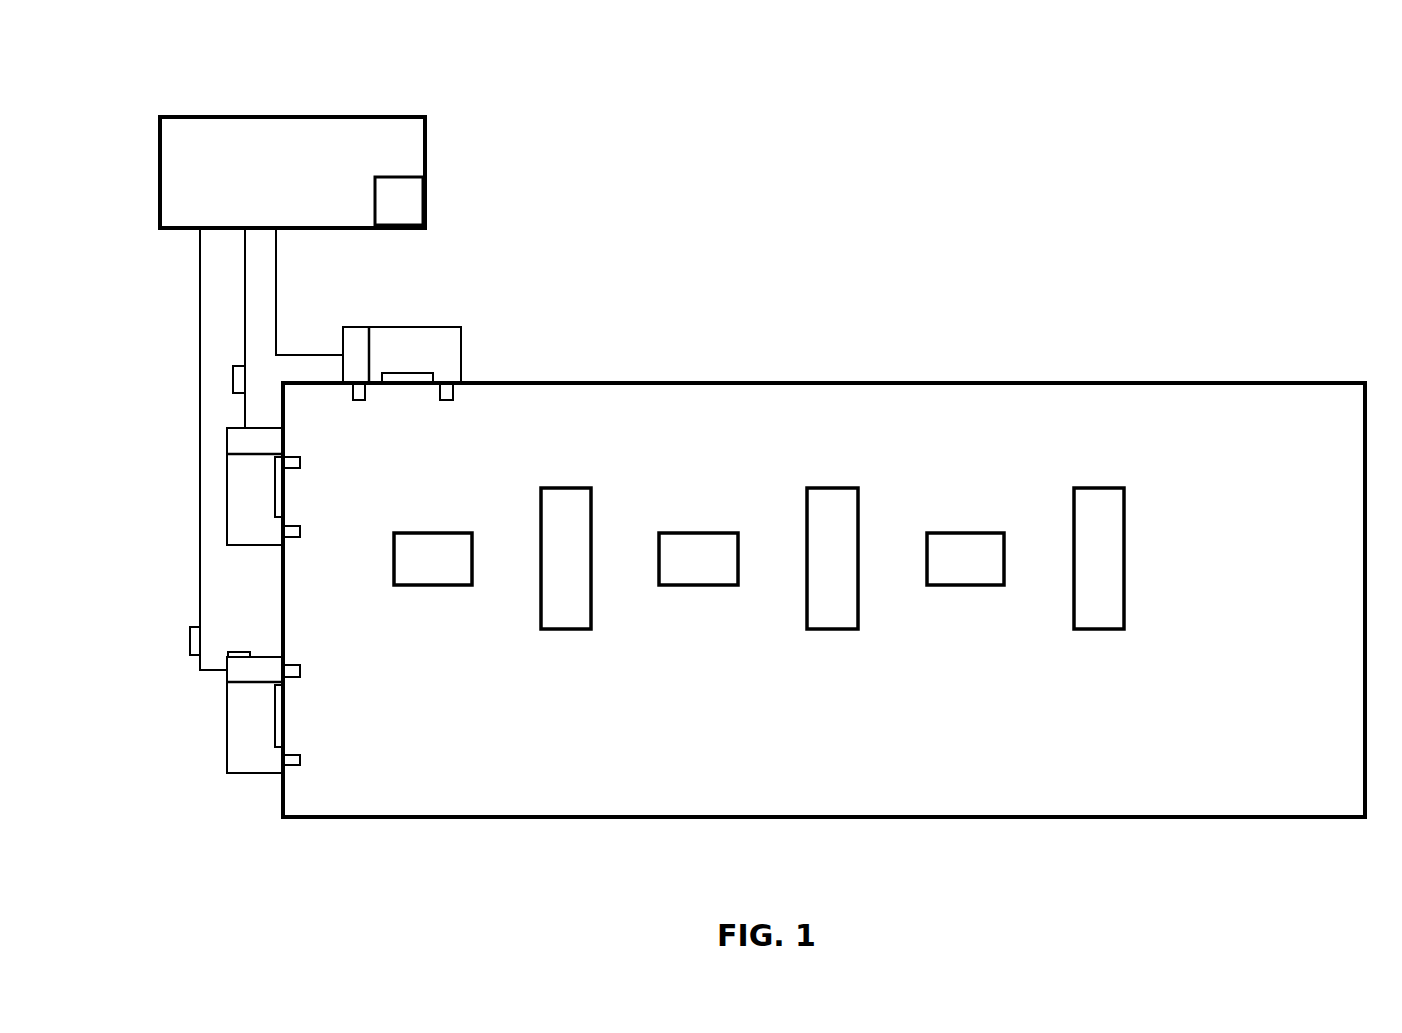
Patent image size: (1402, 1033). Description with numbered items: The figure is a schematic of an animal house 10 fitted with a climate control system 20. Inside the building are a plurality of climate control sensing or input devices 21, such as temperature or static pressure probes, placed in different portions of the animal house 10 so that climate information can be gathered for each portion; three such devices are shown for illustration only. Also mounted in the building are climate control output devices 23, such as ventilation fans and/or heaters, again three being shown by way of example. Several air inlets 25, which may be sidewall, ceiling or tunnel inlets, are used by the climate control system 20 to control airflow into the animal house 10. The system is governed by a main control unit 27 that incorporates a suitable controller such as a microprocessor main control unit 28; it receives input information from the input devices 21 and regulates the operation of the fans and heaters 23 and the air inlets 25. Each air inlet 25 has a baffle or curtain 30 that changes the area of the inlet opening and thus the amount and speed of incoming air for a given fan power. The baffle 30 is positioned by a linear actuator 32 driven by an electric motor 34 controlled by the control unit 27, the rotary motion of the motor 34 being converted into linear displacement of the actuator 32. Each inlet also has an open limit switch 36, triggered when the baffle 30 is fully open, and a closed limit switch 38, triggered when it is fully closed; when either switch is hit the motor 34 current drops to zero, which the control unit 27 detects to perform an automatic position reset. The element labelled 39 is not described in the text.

The animal house 10 is at (902, 292).
The climate control system 20 is at (476, 268).
The climate control sensing or input devices 21 is at (445, 585).
The climate control output devices 23 is at (575, 629).
The air inlets 25 is at (462, 362).
The main control unit 27 is at (345, 117).
The microprocessor main control unit 28 is at (393, 178).
The baffle or curtain 30 is at (418, 373).
The actuator 32 is at (378, 373).
The motor 34 is at (347, 327).
The open limit switch 36 is at (447, 400).
The closed limit switch 38 is at (358, 400).
The connector 39 is at (233, 380).